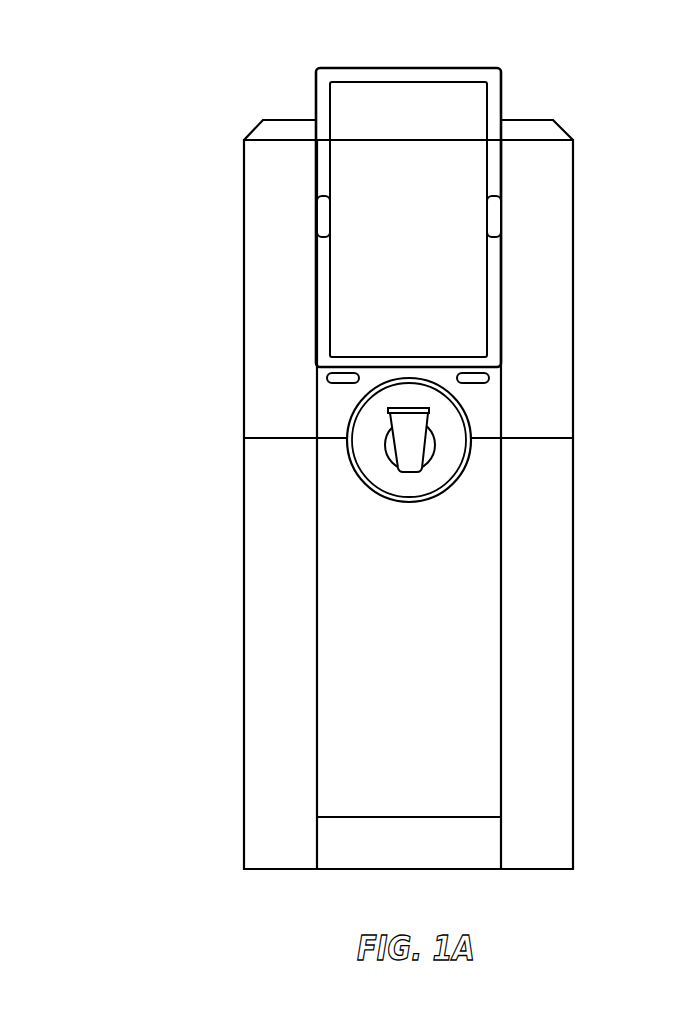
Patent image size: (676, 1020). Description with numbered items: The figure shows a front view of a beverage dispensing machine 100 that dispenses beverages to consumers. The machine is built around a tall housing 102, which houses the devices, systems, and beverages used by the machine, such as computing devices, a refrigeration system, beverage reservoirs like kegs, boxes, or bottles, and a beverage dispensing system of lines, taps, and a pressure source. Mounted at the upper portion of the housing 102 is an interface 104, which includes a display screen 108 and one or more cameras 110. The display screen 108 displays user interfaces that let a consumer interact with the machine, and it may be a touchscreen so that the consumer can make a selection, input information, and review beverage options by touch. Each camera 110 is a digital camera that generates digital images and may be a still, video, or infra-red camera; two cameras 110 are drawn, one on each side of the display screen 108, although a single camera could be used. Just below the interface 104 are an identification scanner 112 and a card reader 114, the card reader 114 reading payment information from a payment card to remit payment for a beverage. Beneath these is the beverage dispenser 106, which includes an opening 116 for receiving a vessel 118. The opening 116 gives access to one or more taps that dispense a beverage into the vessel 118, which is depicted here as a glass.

The beverage dispensing machine 100 is at (201, 111).
The housing 102 is at (244, 288).
The interface 104 is at (503, 90).
The beverage dispenser 106 is at (363, 428).
The display screen 108 is at (466, 118).
The camera 110 is at (317, 222).
The identification scanner 112 is at (485, 375).
The card reader 114 is at (327, 375).
The opening 116 is at (384, 447).
The vessel 118 is at (407, 453).